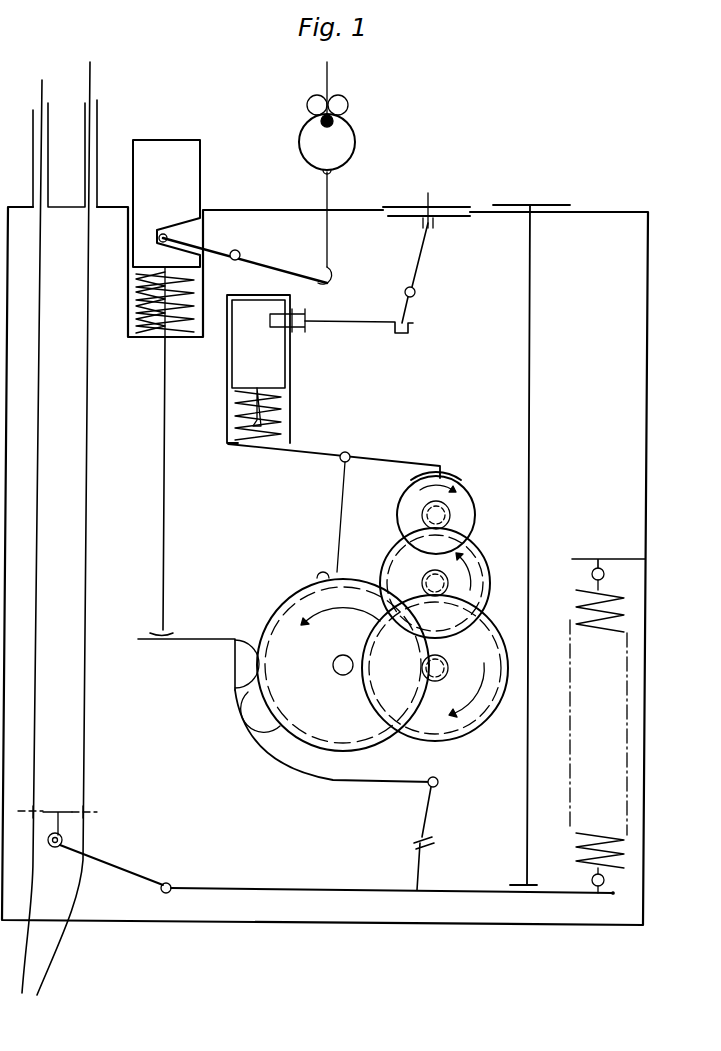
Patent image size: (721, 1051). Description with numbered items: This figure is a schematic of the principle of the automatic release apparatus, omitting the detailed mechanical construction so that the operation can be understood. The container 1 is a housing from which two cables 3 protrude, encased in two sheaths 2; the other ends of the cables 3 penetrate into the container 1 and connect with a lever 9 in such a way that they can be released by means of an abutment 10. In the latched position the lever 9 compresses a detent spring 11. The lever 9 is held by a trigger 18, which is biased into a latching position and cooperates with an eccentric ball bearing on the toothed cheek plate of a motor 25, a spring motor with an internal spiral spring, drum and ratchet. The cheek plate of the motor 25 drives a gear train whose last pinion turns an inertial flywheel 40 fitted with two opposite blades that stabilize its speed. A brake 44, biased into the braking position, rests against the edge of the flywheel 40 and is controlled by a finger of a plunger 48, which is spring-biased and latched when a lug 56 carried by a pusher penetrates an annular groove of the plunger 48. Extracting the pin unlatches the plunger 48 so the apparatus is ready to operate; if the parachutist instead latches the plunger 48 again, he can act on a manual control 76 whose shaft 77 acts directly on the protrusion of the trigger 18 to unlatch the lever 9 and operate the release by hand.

The container 1 is at (605, 408).
The sheaths 2 is at (82, 177).
The cables 3 is at (90, 80).
The lever 9 is at (293, 892).
The abutment 10 is at (37, 995).
The detent spring 11 is at (603, 740).
The trigger 18 is at (382, 785).
The motor 25 is at (322, 710).
The inertial flywheel 40 is at (465, 513).
The brake 44 is at (397, 458).
The plunger 48 is at (267, 362).
The lug 56 is at (355, 320).
The manual control 76 is at (188, 182).
The shaft 77 is at (163, 520).